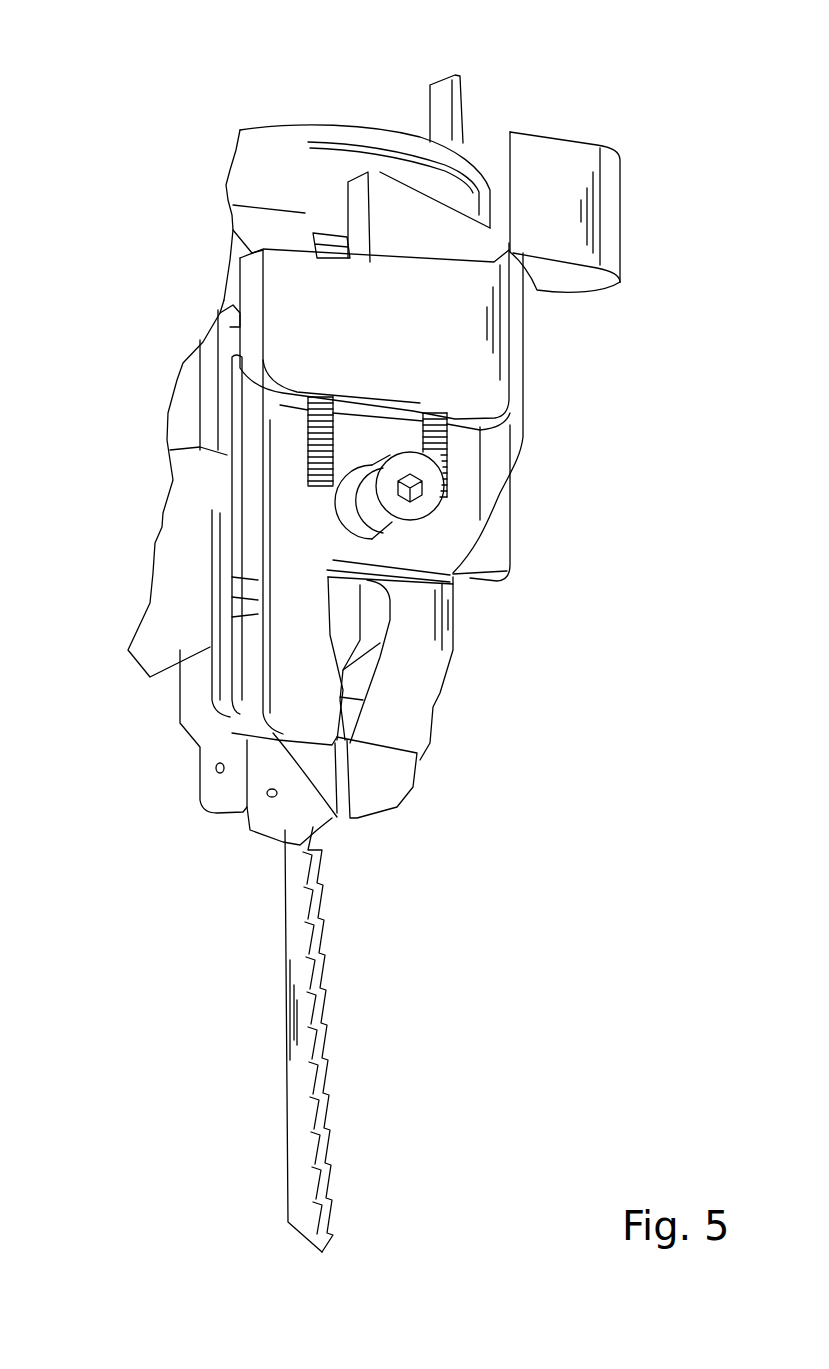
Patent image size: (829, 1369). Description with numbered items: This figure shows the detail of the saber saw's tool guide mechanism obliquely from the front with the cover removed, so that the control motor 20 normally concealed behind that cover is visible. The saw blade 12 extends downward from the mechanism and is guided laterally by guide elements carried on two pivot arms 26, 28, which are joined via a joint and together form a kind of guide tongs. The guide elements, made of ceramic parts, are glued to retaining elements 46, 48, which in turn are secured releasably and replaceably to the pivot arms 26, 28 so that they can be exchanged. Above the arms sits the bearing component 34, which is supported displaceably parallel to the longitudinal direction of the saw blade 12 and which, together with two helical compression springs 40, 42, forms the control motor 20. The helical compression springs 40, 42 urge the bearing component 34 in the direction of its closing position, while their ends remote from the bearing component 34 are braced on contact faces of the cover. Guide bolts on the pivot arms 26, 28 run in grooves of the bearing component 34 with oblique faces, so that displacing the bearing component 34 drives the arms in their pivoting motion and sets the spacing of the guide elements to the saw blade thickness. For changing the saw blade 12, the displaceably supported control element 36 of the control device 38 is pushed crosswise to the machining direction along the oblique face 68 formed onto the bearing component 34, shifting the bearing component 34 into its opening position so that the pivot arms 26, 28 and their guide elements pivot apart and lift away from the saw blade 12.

The saw blade 12 is at (300, 943).
The control motor 20 is at (497, 443).
The pivot arm 26 is at (305, 675).
The pivot arm 28 is at (410, 673).
The bearing component 34 is at (509, 330).
The control element 36 is at (557, 215).
The control device 38 is at (563, 133).
The helical compression spring 40 is at (307, 443).
The helical compression spring 42 is at (448, 452).
The retaining element 46 is at (305, 773).
The retaining element 48 is at (373, 783).
The oblique face 68 is at (455, 203).